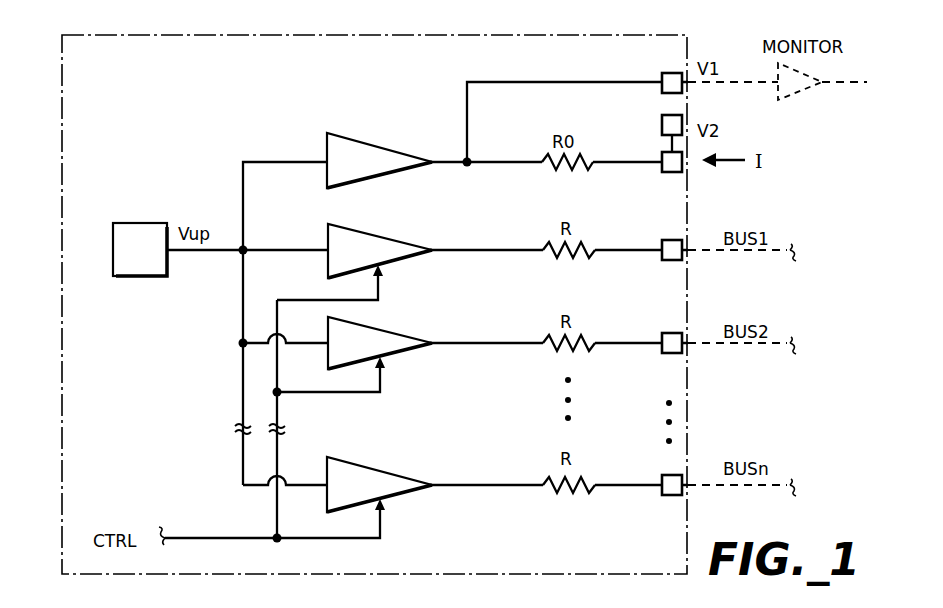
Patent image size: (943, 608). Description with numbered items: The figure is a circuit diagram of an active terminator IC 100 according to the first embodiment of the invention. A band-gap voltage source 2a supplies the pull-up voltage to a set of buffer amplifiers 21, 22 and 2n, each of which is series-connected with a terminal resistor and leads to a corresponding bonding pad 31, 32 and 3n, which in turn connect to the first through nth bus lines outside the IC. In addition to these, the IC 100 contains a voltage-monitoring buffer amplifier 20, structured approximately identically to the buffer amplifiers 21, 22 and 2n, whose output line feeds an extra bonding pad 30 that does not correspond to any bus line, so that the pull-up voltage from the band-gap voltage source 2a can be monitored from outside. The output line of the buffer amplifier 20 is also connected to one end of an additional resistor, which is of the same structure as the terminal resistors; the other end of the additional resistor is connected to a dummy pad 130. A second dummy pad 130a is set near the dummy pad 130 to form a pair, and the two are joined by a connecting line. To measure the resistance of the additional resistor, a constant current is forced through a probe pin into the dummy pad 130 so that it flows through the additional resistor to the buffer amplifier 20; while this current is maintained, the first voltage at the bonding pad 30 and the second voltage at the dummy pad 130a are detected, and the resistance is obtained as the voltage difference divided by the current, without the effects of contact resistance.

The active terminator IC 100 is at (279, 33).
The band-gap voltage source 2a is at (140, 222).
The voltage-monitoring buffer amplifier 20 is at (393, 150).
The buffer amplifier 21 is at (393, 238).
The buffer amplifier 22 is at (393, 331).
The buffer amplifier 2n is at (393, 471).
The bonding pad 30 is at (670, 72).
The dummy pad 130a is at (662, 121).
The dummy pad 130 is at (672, 173).
The bonding pad 31 is at (672, 261).
The bonding pad 32 is at (672, 354).
The bonding pad 3n is at (672, 496).